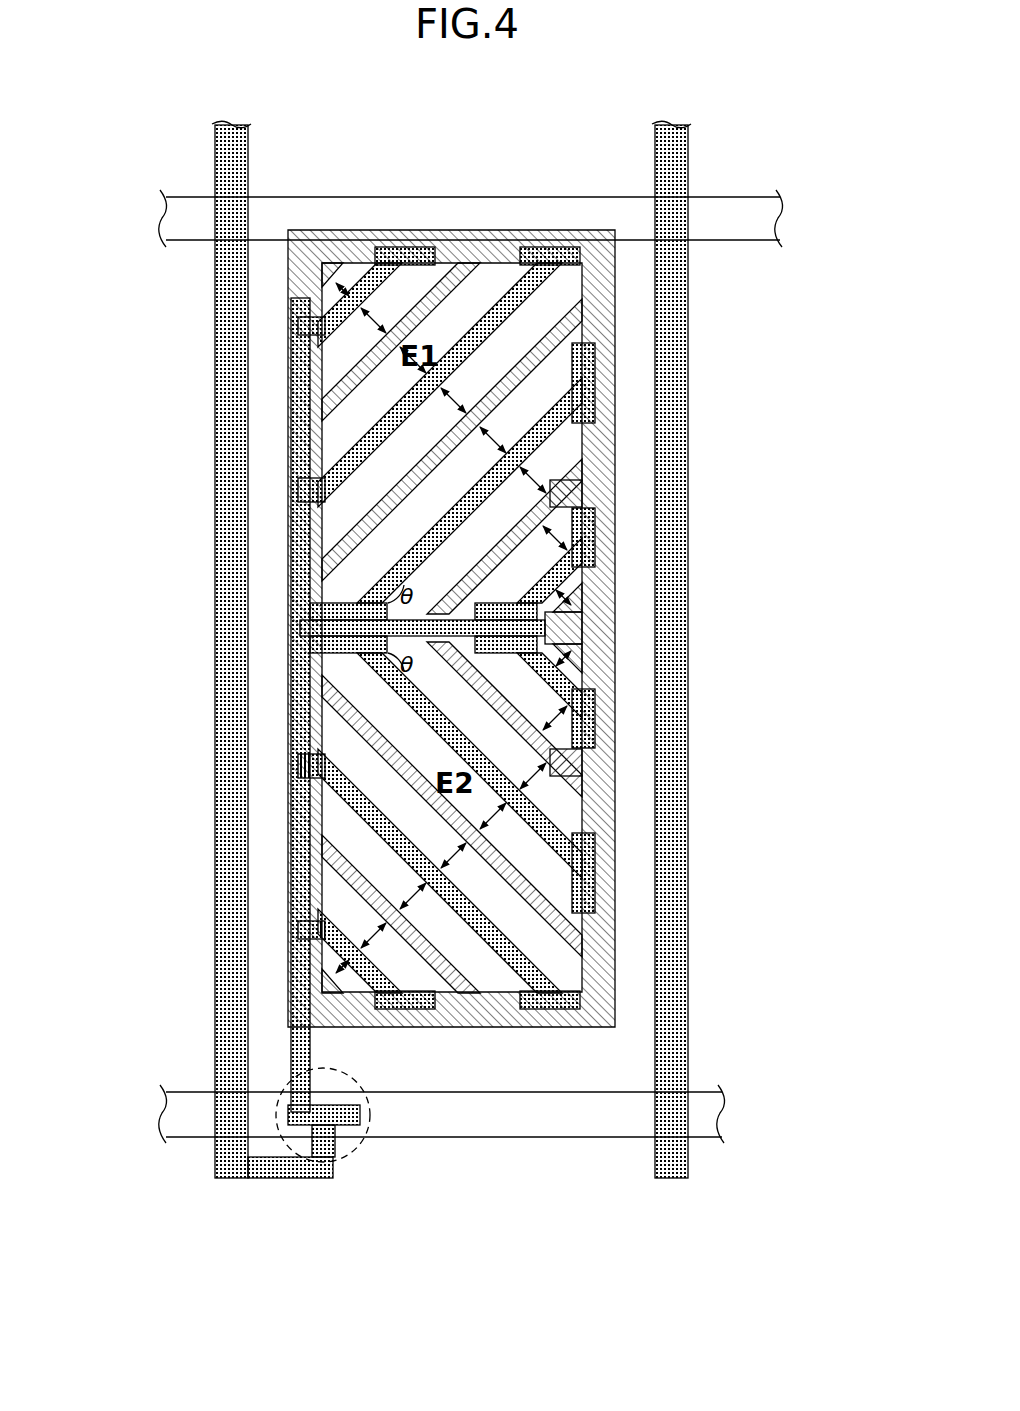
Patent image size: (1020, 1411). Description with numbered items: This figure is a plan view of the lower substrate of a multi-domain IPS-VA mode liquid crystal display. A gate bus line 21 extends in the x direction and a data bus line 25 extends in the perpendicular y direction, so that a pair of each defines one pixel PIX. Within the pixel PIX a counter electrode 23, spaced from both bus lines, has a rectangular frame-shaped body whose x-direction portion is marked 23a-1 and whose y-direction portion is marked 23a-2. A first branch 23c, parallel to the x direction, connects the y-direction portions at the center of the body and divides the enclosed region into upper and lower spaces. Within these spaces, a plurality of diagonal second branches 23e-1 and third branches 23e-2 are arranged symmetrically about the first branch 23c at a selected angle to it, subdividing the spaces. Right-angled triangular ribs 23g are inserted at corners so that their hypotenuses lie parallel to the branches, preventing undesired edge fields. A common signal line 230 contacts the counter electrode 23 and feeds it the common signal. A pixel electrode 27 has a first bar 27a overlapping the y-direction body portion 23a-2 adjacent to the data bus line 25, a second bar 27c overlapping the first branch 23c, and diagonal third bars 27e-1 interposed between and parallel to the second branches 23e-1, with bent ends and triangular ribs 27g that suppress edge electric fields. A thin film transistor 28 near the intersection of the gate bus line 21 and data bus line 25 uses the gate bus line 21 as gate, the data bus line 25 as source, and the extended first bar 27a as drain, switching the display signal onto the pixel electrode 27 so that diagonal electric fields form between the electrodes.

The common signal line 230 is at (776, 212).
The gate bus line 21 is at (728, 1112).
The data bus line 25 is at (235, 1180).
The counter electrode 23 is at (596, 628).
The body portion in the x direction 23a-1 is at (505, 253).
The body portion in the y direction 23a-2 is at (800, 752).
The second branch 23e-1 is at (520, 533).
The third branch 23e-2 is at (520, 718).
The rib 23g is at (573, 606).
The first branch 23c is at (573, 630).
The pixel electrode 27 is at (112, 930).
The third bar 27e-1 is at (378, 437).
The first bar 27a is at (305, 600).
The rib 27g is at (310, 935).
The second bar 27c is at (300, 628).
The thin film transistor 28 is at (364, 1145).
The pixel PIX is at (446, 224).